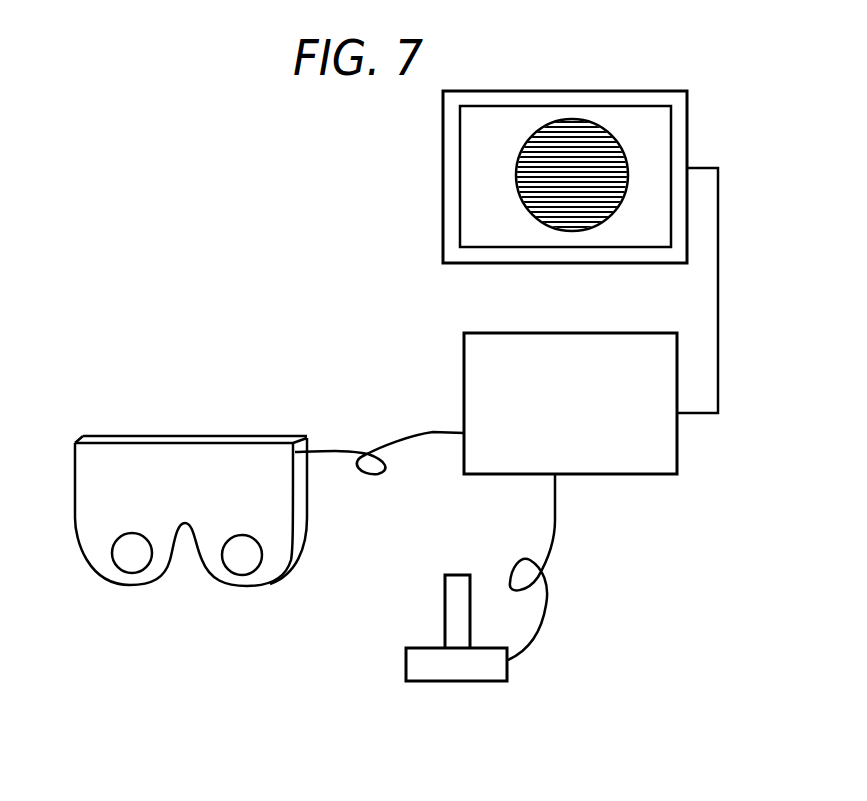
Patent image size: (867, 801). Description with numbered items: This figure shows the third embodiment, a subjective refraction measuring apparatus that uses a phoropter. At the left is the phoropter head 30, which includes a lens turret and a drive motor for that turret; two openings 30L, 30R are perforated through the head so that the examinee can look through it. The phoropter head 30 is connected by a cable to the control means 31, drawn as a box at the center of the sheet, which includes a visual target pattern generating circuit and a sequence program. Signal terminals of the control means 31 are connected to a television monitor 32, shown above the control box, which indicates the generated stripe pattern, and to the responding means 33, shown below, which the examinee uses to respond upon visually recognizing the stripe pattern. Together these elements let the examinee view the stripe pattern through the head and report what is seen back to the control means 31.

The phoropter head 30 is at (262, 433).
The left opening 30L is at (127, 558).
The right opening 30R is at (250, 553).
The control means 31 is at (630, 333).
The television monitor 32 is at (687, 110).
The responding means 33 is at (415, 667).